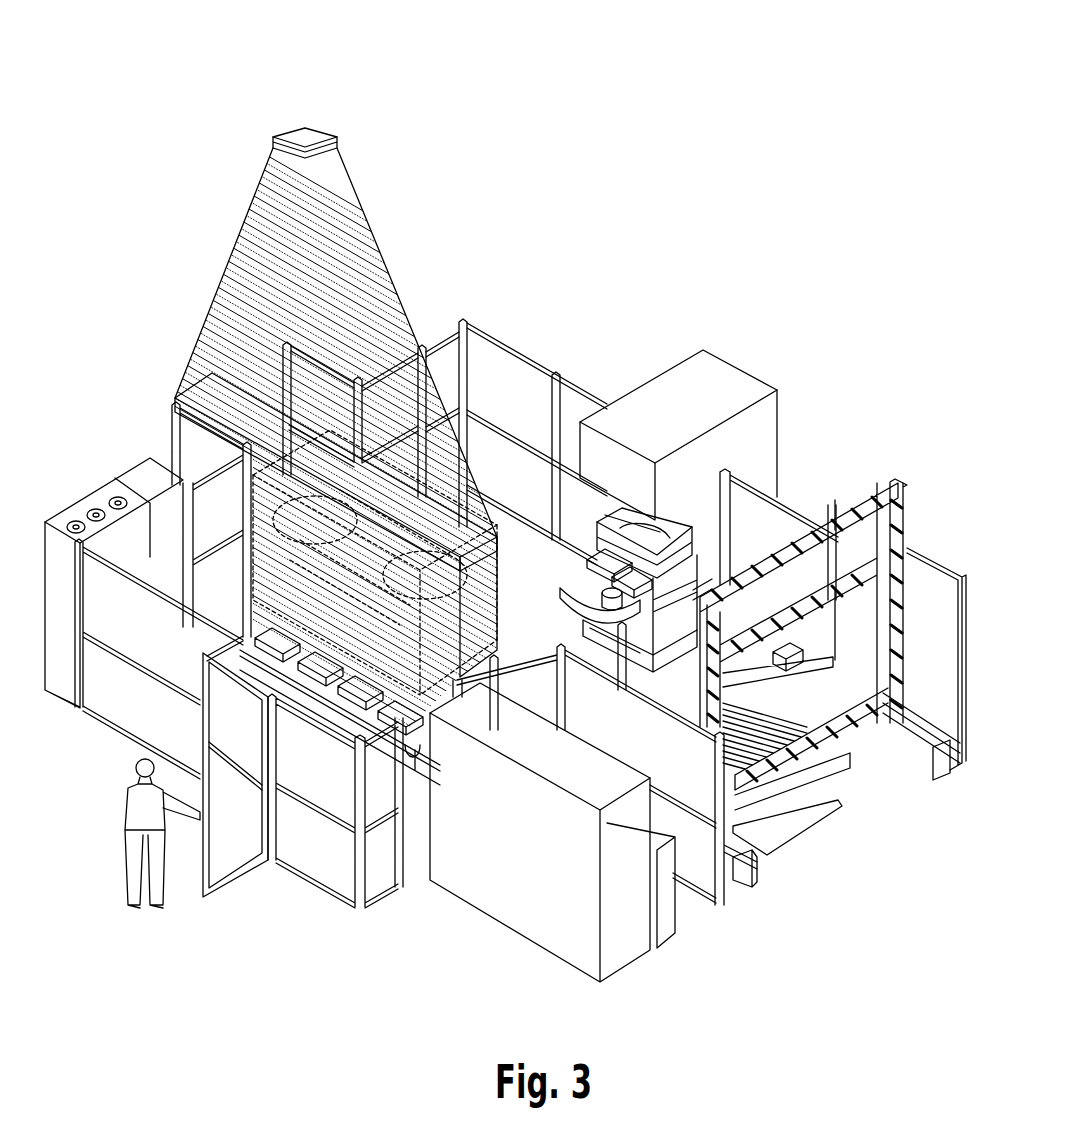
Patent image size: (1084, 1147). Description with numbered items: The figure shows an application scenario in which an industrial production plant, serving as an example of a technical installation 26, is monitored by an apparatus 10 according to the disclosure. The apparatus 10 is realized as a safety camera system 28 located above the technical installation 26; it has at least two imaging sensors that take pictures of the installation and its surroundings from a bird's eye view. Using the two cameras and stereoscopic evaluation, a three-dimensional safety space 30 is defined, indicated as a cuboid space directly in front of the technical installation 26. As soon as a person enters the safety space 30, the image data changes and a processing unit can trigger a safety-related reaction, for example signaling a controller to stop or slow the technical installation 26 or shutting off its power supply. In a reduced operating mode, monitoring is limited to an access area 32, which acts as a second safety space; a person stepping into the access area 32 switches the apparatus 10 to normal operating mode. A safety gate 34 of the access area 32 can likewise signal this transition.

The apparatus 10 is at (329, 98).
The technical installation 26 is at (520, 588).
The safety camera system 28 is at (297, 134).
The safety space 30 is at (200, 388).
The access area 32 is at (305, 862).
The safety gate 34 is at (230, 857).